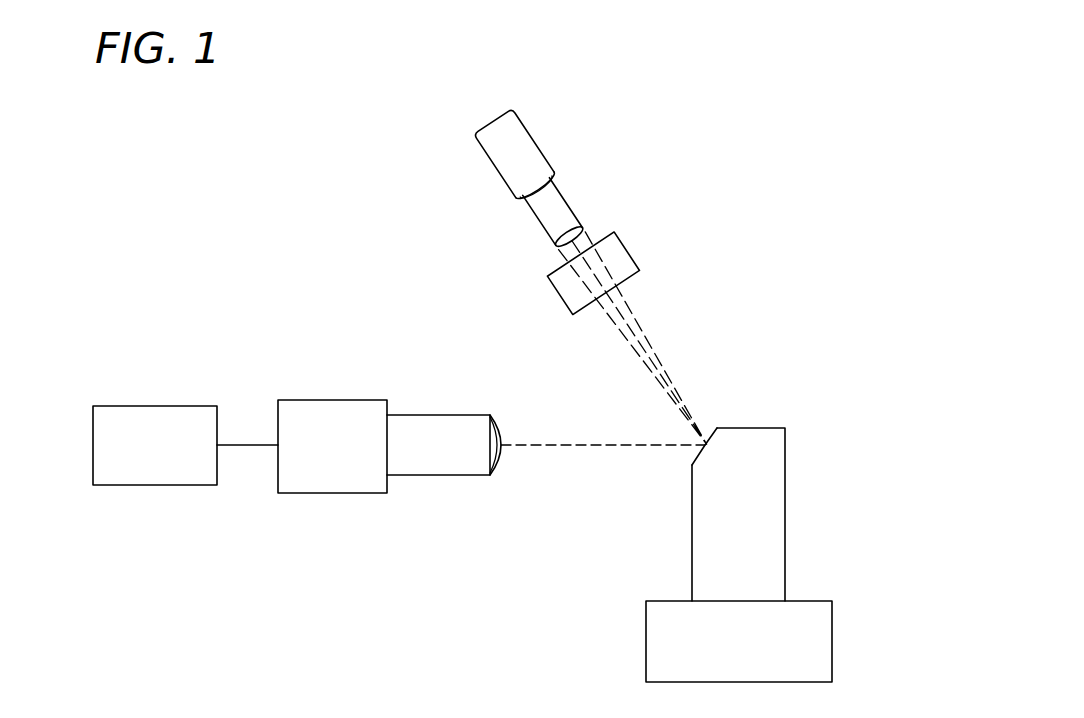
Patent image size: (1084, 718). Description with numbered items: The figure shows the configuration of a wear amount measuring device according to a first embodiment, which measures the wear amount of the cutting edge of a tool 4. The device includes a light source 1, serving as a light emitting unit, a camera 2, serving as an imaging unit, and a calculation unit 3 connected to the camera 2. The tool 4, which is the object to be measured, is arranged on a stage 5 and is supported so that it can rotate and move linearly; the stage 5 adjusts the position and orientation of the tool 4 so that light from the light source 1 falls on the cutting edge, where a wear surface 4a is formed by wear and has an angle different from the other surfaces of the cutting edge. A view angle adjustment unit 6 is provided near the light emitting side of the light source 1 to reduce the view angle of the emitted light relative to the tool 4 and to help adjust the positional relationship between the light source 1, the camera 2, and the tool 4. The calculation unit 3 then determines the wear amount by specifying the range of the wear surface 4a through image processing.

The light source 1 is at (530, 153).
The camera 2 is at (330, 410).
The calculation unit 3 is at (102, 405).
The tool 4 is at (772, 513).
The wear surface 4a is at (703, 428).
The stage 5 is at (820, 650).
The view angle adjustment unit 6 is at (617, 256).